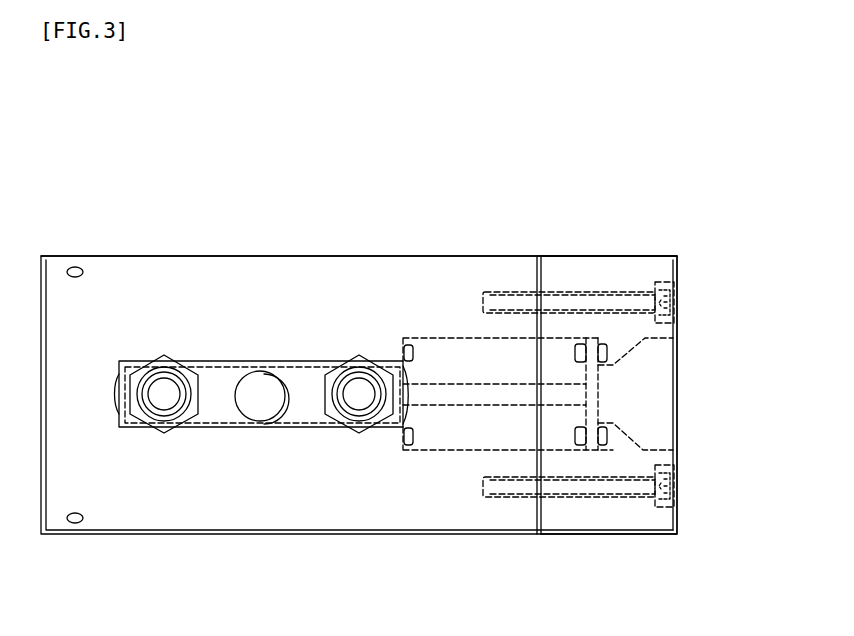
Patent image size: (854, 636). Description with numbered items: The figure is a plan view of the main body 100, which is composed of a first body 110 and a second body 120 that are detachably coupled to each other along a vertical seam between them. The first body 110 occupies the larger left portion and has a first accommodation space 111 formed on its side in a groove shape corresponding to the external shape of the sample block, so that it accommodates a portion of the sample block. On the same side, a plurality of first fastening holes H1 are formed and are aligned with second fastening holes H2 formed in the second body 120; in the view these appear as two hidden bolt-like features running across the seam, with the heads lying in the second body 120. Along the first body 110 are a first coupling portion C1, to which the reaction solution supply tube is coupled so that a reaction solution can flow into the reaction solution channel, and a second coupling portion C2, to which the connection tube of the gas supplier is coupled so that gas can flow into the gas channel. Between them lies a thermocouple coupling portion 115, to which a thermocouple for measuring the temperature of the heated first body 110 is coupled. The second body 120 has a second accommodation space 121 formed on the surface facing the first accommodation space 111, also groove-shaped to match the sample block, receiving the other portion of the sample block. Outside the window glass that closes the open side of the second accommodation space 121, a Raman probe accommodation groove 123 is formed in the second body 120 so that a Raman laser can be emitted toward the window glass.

The main body 100 is at (666, 165).
The first body 110 is at (327, 256).
The first accommodation space 111 is at (460, 362).
The thermocouple coupling portion 115 is at (247, 368).
The second body 120 is at (620, 256).
The second accommodation space 121 is at (552, 360).
The Raman probe accommodation groove 123 is at (632, 398).
The first coupling portion C1 is at (153, 368).
The second coupling portion C2 is at (372, 378).
The first fastening holes H1 is at (507, 300).
The second fastening holes H2 is at (639, 292).